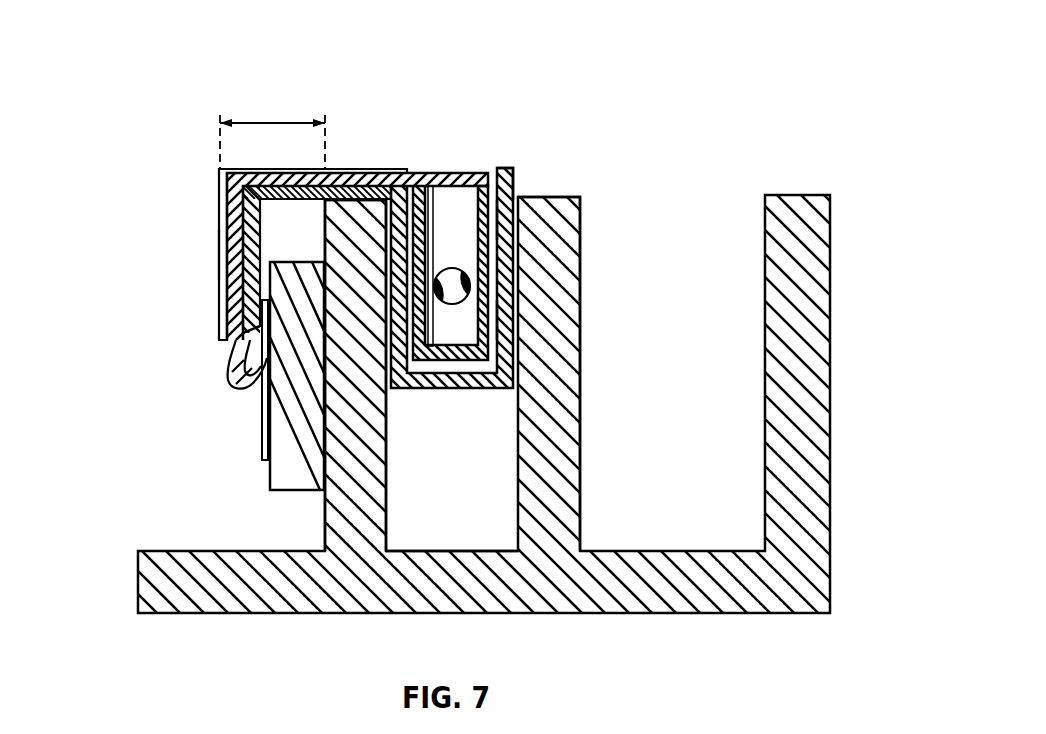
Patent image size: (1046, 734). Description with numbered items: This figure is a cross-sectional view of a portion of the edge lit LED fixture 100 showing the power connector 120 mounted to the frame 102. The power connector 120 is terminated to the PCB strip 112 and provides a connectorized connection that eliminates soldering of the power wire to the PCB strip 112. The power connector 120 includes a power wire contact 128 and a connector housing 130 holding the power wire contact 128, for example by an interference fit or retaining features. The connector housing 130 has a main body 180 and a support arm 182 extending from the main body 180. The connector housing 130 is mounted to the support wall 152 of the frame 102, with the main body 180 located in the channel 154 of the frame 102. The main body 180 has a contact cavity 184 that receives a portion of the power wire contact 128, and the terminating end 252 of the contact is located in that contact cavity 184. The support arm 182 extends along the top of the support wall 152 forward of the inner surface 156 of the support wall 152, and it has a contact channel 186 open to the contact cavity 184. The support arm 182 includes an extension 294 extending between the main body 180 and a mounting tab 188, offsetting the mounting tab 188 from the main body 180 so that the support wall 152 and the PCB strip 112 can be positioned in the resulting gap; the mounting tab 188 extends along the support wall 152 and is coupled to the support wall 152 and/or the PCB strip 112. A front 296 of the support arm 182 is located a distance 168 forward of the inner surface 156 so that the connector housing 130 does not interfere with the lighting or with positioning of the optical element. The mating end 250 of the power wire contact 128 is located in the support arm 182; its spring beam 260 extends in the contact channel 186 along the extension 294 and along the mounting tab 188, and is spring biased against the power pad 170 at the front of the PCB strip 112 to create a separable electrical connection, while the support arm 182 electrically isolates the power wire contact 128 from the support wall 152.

The edge lit LED fixture 100 is at (605, 58).
The frame 102 is at (825, 345).
The PCB strip 112 is at (277, 470).
The power connector 120 is at (480, 148).
The power wire contact 128 is at (430, 187).
The connector housing 130 is at (505, 215).
The support wall 152 is at (365, 455).
The channel 154 is at (458, 525).
The inner surface 156 is at (323, 457).
The distance 168 is at (272, 123).
The power pad 170 is at (263, 440).
The main body 180 is at (505, 317).
The support arm 182 is at (353, 186).
The contact cavity 184 is at (502, 160).
The contact channel 186 is at (209, 268).
The mounting tab 188 is at (252, 304).
The mating end 250 is at (237, 348).
The terminating end 252 is at (462, 285).
The spring beam 260 is at (230, 215).
The extension 294 is at (410, 187).
The front 296 is at (220, 248).